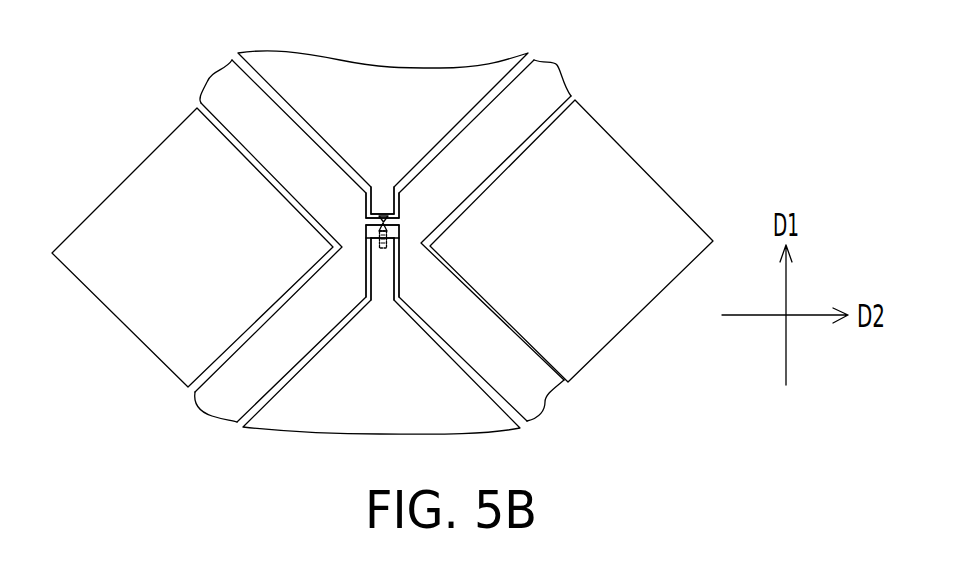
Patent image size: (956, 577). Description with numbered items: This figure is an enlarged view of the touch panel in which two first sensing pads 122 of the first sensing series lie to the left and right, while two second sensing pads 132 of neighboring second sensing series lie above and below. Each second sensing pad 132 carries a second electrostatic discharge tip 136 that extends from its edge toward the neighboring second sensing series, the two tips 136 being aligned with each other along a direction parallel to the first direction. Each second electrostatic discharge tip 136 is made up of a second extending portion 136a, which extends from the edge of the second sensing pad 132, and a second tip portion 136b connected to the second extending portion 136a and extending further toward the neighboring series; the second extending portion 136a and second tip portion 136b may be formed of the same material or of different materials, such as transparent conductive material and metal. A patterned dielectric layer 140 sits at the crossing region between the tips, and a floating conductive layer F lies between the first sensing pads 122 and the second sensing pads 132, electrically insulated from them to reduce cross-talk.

The first sensing pad 122 is at (186, 276).
The second sensing pad 132 is at (403, 124).
The second electrostatic discharge tip 136 is at (588, 147).
The second extending portion 136a is at (380, 195).
The second tip portion 136b is at (395, 218).
The patterned dielectric layer 140 is at (378, 221).
The floating conductive layer F is at (547, 83).